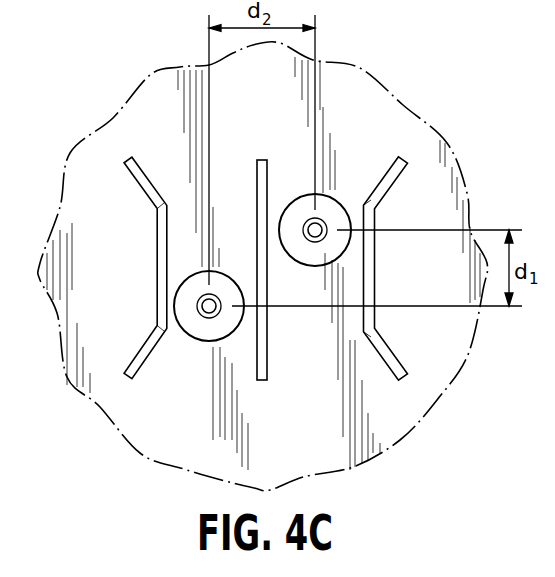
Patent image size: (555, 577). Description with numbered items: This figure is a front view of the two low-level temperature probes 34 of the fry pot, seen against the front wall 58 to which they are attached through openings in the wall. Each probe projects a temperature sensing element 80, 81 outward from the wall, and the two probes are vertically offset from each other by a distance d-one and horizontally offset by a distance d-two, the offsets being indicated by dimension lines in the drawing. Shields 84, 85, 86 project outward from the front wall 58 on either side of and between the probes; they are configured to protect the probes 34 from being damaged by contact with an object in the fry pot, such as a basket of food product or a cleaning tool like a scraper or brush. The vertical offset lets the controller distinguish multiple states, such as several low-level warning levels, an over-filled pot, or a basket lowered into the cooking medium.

The low-level temperature probe 34 is at (331, 170).
The front wall 58 is at (312, 458).
The temperature sensing element 80 is at (323, 223).
The temperature sensing element 81 is at (214, 314).
The shield 84 is at (378, 287).
The shield 85 is at (257, 170).
The shield 86 is at (157, 258).